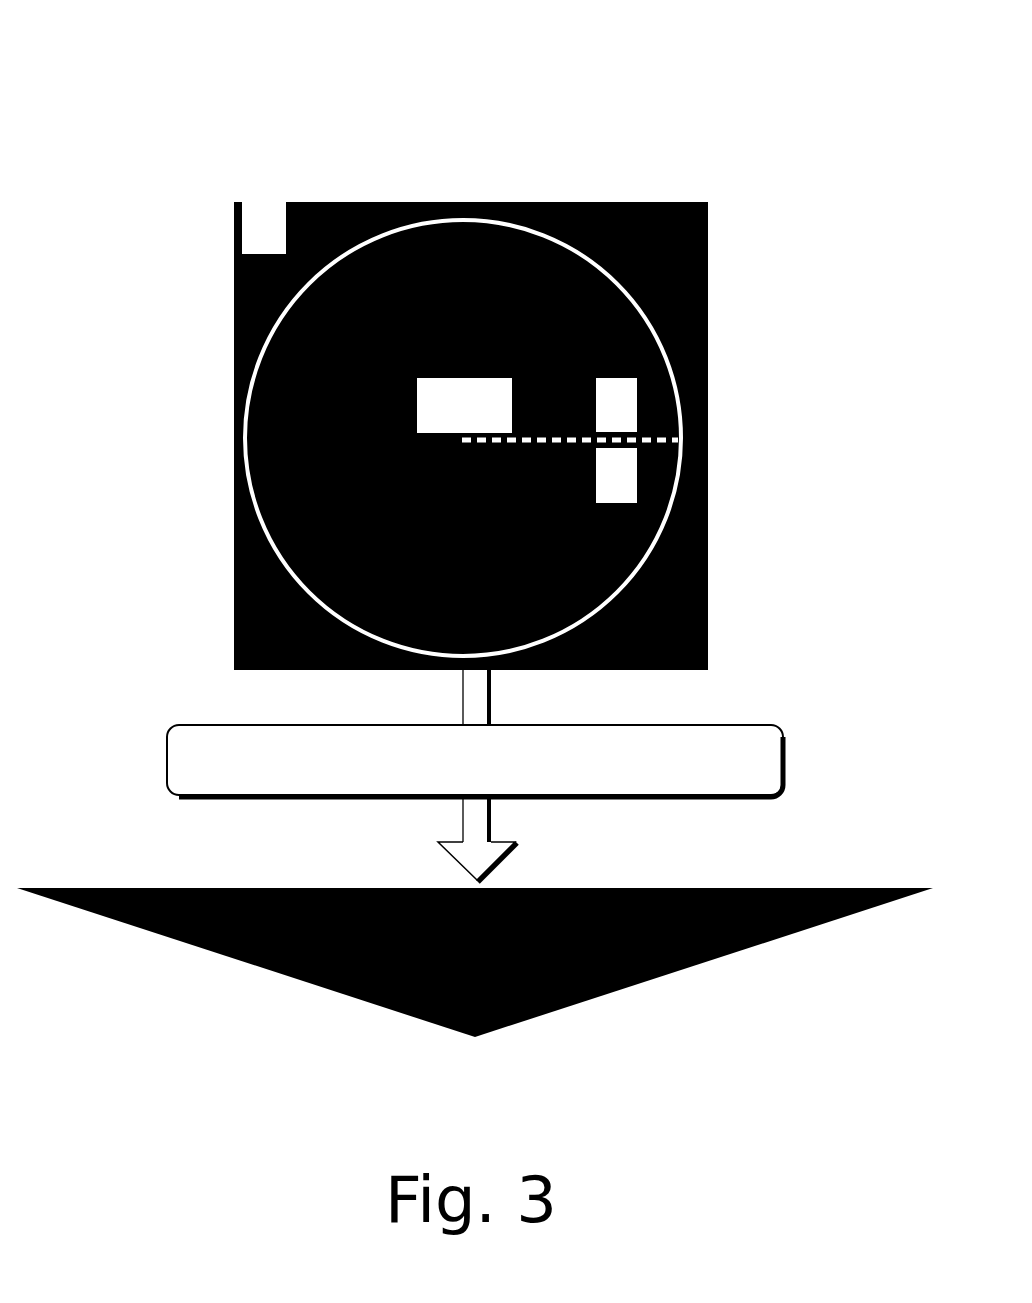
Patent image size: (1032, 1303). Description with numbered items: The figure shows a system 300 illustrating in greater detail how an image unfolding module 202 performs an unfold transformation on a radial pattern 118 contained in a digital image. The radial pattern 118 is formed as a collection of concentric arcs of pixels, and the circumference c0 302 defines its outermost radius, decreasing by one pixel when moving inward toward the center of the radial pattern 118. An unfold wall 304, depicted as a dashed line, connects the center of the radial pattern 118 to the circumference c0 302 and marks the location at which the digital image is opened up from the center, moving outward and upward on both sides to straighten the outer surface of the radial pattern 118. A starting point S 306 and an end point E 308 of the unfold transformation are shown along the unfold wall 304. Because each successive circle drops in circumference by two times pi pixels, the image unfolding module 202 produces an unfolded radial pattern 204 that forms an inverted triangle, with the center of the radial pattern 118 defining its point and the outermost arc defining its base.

The system 300 is at (181, 94).
The radial pattern 118 is at (480, 202).
The circumference c0 302 is at (348, 250).
The unfold wall 304 is at (554, 438).
The starting point S 306 is at (679, 438).
The end point E 308 is at (679, 442).
The image unfolding module 202 is at (631, 771).
The unfolded radial pattern 204 is at (808, 889).